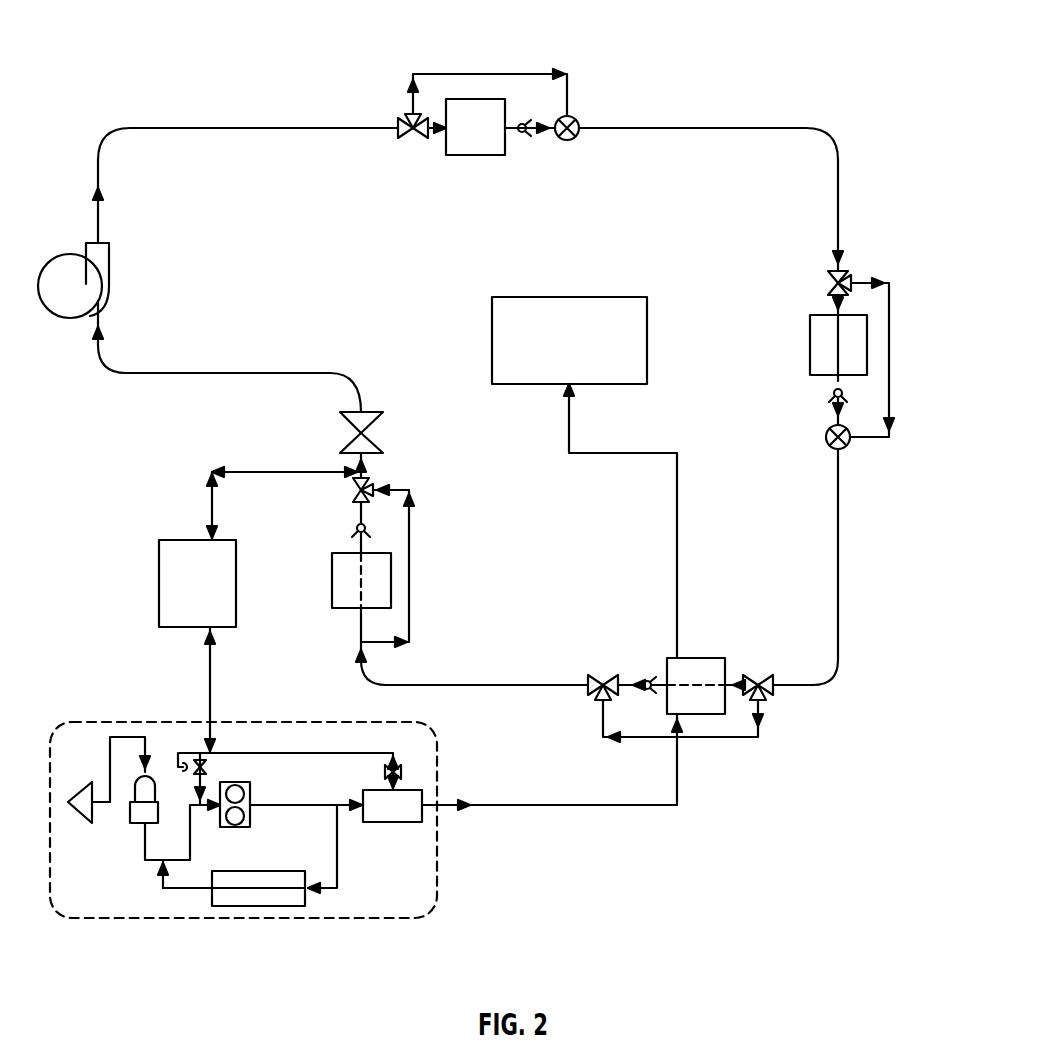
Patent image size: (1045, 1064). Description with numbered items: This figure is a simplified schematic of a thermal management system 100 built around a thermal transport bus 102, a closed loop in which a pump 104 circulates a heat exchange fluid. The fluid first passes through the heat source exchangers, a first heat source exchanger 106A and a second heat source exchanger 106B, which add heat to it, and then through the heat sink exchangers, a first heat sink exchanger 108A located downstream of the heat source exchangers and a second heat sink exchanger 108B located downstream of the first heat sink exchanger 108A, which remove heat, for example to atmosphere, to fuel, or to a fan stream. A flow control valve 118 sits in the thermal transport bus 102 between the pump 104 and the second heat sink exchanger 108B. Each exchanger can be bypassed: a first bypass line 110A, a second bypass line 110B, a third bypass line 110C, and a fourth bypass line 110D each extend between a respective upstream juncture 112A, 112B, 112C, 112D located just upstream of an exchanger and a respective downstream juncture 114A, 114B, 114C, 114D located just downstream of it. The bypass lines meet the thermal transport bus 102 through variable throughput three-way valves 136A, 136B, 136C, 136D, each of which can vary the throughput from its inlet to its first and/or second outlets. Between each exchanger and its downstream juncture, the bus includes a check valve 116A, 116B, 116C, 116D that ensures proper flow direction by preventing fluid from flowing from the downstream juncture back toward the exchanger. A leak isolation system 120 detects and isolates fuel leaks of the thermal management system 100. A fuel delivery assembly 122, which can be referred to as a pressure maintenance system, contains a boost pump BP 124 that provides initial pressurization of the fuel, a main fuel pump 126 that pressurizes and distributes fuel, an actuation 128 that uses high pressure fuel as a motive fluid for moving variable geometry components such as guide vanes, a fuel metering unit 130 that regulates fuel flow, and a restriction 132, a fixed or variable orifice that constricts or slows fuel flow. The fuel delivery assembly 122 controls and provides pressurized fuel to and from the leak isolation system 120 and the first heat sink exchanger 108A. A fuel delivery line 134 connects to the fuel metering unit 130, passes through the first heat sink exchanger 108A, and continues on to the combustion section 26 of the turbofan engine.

The thermal management system 100 is at (231, 102).
The thermal transport bus 102 is at (88, 157).
The pump 104 is at (110, 293).
The first heat source exchanger 106A is at (473, 156).
The second heat source exchanger 106B is at (810, 348).
The first heat sink exchanger 108A is at (697, 658).
The second heat sink exchanger 108B is at (332, 577).
The first bypass line 110A is at (435, 73).
The second bypass line 110B is at (890, 353).
The third bypass line 110C is at (690, 737).
The fourth bypass line 110D is at (409, 560).
The upstream juncture 112A is at (403, 113).
The upstream juncture 112B is at (852, 266).
The upstream juncture 112C is at (758, 677).
The upstream juncture 112D is at (363, 642).
The downstream juncture 114A is at (571, 141).
The downstream juncture 114B is at (826, 433).
The downstream juncture 114C is at (585, 702).
The downstream juncture 114D is at (383, 507).
The check valve 116A is at (522, 135).
The check valve 116B is at (831, 393).
The check valve 116C is at (647, 680).
The check valve 116D is at (356, 528).
The flow control valve 118 is at (350, 426).
The leak isolation system 120 is at (159, 555).
The fuel delivery assembly 122 is at (66, 713).
The BP 124 is at (88, 786).
The main fuel pump 126 is at (252, 796).
The actuation 128 is at (264, 871).
The fuel metering unit 130 is at (393, 824).
The restriction 132 is at (418, 763).
The fuel delivery line 134 is at (676, 537).
The three-way valve 136A is at (410, 134).
The three-way valve 136B is at (836, 282).
The three-way valve 136C is at (605, 680).
The three-way valve 136D is at (367, 487).
The combustion section 26 is at (492, 304).